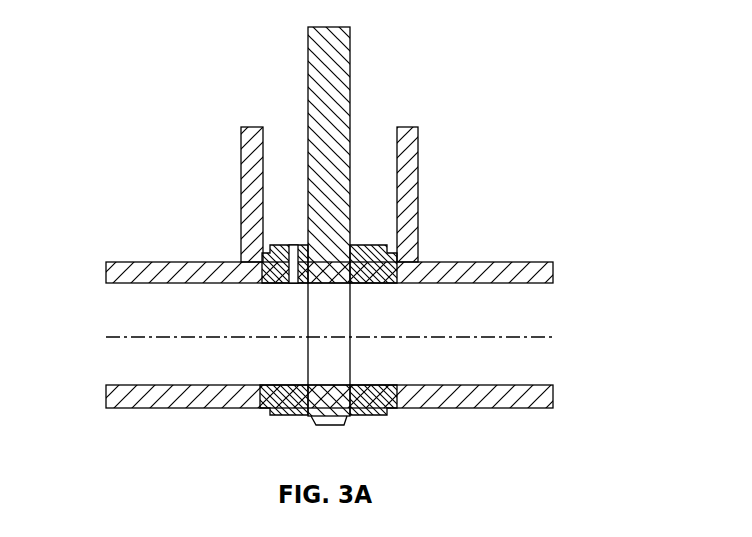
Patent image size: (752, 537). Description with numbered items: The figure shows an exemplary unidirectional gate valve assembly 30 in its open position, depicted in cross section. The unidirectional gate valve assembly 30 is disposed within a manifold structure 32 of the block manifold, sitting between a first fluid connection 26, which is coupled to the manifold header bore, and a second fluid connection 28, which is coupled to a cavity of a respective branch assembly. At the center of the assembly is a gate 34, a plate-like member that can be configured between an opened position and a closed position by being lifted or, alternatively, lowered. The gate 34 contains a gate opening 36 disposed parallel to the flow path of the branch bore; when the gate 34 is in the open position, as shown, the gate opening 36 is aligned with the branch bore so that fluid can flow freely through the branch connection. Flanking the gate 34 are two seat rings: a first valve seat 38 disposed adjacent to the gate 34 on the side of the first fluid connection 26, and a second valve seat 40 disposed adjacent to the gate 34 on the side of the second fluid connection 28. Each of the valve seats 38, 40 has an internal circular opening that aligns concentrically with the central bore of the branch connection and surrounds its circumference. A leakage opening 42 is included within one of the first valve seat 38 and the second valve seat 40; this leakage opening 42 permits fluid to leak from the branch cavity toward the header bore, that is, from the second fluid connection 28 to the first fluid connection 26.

The unidirectional gate valve assembly 30 is at (97, 41).
The manifold structure 32 is at (132, 262).
The first fluid connection 26 is at (115, 311).
The second fluid connection 28 is at (547, 310).
The gate 34 is at (351, 60).
The gate opening 36 is at (350, 323).
The first valve seat 38 is at (271, 252).
The second valve seat 40 is at (369, 245).
The leakage opening 42 is at (291, 284).